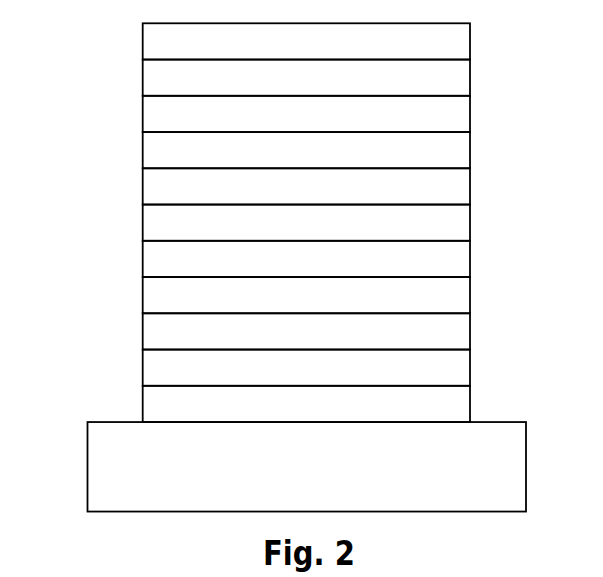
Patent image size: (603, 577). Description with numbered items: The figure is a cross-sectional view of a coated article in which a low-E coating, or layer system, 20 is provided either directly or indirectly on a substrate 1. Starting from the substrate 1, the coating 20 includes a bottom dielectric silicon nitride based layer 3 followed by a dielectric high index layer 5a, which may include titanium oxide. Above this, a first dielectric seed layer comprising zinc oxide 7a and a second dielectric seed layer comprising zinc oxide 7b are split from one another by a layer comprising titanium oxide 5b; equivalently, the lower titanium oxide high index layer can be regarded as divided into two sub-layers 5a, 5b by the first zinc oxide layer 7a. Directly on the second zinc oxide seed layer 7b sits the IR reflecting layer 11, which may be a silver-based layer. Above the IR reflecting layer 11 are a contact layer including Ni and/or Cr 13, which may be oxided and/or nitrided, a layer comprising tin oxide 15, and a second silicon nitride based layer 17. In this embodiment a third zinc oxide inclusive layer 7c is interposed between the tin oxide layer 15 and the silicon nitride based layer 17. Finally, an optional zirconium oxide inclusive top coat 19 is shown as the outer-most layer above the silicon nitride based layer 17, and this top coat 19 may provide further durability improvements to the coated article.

The substrate 1 is at (526, 467).
The bottom dielectric silicon nitride based layer 3 is at (470, 404).
The dielectric high index layer 5a is at (470, 368).
The first dielectric seed layer comprising zinc oxide 7a is at (470, 331).
The layer comprising titanium oxide 5b is at (470, 295).
The second dielectric seed layer comprising zinc oxide 7b is at (470, 259).
The IR reflecting layer 11 is at (470, 223).
The contact layer 13 is at (470, 186).
The layer comprising tin oxide 15 is at (470, 150).
The third zinc oxide inclusive layer 7c is at (470, 114).
The second silicon nitride based layer 17 is at (470, 78).
The zirconium oxide inclusive top coat 19 is at (470, 41).
The low-E coating 20 is at (70, 24).